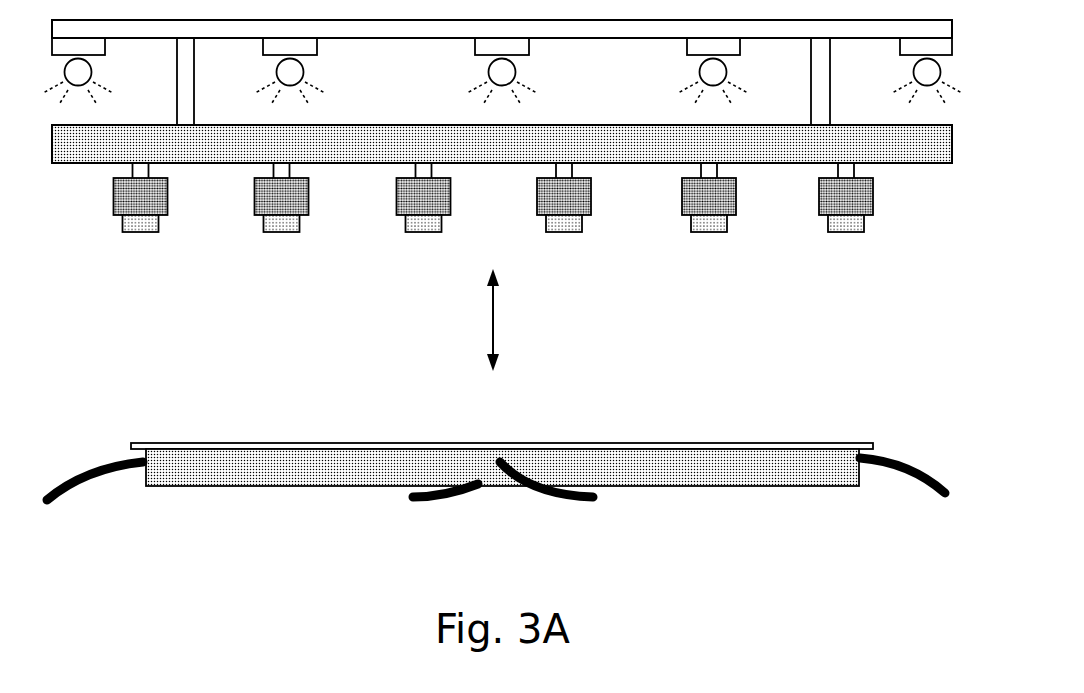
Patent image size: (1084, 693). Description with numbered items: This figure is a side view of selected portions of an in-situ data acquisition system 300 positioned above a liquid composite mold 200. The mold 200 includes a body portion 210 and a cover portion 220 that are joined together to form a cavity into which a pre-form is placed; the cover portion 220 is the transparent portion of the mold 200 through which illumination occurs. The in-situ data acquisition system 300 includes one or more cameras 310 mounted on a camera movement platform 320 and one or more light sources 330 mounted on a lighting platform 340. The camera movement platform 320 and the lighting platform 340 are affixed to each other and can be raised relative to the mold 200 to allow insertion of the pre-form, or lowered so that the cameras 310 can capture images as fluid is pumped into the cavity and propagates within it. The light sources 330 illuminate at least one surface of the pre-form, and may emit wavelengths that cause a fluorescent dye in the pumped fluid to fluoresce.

The liquid composite mold 200 is at (496, 495).
The body portion 210 is at (680, 480).
The cover portion 220 is at (318, 443).
The in-situ data acquisition system 300 is at (141, 309).
The camera 310 is at (144, 222).
The camera movement platform 320 is at (350, 152).
The light source 330 is at (300, 69).
The lighting platform 340 is at (415, 32).